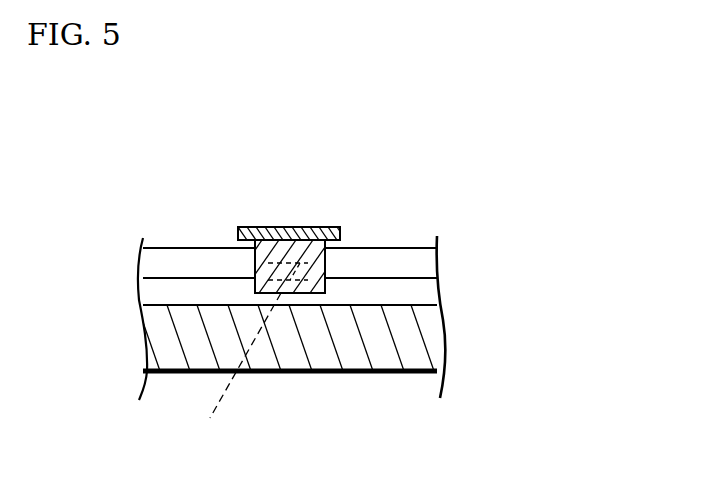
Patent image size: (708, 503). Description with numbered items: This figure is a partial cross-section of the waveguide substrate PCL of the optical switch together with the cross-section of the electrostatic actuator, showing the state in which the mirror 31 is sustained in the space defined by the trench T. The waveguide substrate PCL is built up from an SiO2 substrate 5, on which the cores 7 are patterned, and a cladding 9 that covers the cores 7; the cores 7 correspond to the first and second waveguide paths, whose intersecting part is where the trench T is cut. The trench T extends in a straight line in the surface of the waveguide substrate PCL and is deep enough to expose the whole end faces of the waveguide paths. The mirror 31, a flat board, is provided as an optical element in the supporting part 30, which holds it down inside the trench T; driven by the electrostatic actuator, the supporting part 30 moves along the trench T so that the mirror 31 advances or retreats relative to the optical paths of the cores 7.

The waveguide substrate PCL is at (165, 242).
The cladding 9 is at (207, 268).
The trench T is at (358, 302).
The SiO2 substrate 5 is at (317, 346).
The supporting part 30 is at (293, 227).
The mirror 31 is at (327, 268).
The cores 7 is at (224, 375).